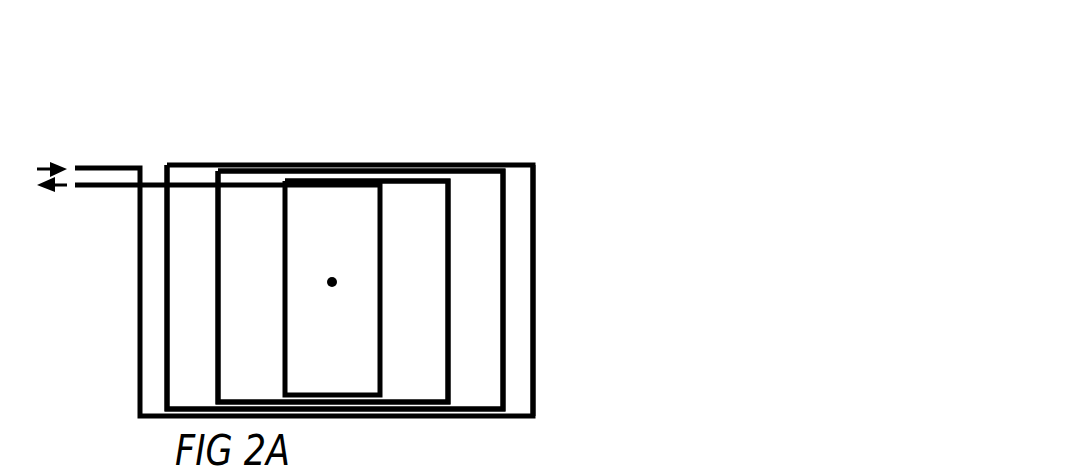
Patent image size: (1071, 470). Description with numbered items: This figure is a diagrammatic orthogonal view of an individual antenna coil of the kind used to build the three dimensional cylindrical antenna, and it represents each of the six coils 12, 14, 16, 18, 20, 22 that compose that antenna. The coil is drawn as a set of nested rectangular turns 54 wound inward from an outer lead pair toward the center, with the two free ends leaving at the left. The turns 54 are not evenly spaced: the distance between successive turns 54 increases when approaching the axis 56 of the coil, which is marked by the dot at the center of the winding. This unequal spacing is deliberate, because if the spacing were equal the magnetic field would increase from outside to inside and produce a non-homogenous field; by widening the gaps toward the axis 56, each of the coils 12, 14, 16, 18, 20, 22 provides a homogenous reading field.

The antenna coil 12 is at (387, 157).
The antenna coil 14 is at (393, 219).
The antenna coil 16 is at (439, 212).
The antenna coil 18 is at (392, 201).
The antenna coil 20 is at (488, 201).
The antenna coil 22 is at (489, 204).
The turns 54 is at (505, 253).
The axis 56 is at (336, 287).